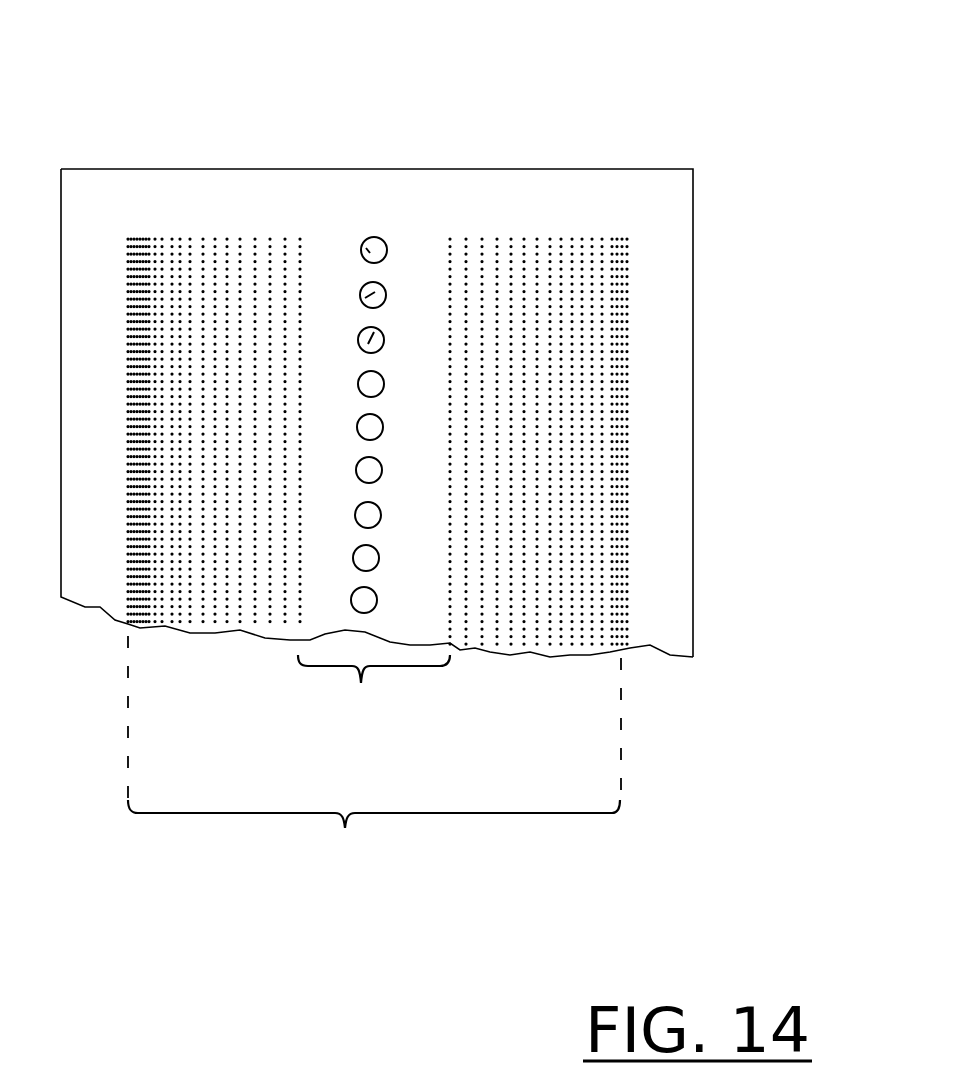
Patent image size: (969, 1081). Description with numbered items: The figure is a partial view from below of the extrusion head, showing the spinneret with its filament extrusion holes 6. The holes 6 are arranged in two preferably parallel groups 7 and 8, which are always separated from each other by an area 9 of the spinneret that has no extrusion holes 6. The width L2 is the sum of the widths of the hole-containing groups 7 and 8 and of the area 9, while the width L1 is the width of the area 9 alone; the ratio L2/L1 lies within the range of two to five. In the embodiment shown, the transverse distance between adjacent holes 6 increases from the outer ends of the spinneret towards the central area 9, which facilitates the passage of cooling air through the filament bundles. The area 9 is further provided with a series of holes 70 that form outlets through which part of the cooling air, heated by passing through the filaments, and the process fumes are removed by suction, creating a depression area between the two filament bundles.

The holes 6 is at (418, 385).
The group of holes 7 is at (95, 558).
The group of holes 8 is at (650, 540).
The area without holes 9 is at (399, 316).
The holes 70 is at (362, 335).
The width of the area without holes L1 is at (374, 694).
The width of the spinneret L2 is at (374, 848).